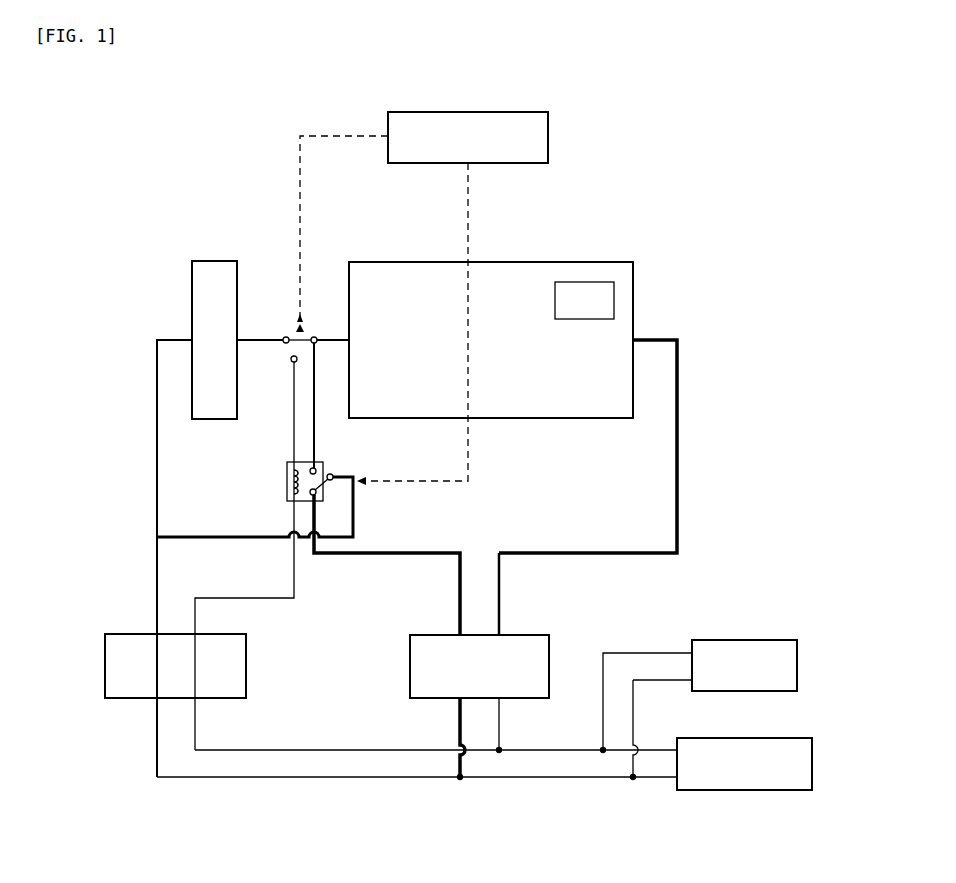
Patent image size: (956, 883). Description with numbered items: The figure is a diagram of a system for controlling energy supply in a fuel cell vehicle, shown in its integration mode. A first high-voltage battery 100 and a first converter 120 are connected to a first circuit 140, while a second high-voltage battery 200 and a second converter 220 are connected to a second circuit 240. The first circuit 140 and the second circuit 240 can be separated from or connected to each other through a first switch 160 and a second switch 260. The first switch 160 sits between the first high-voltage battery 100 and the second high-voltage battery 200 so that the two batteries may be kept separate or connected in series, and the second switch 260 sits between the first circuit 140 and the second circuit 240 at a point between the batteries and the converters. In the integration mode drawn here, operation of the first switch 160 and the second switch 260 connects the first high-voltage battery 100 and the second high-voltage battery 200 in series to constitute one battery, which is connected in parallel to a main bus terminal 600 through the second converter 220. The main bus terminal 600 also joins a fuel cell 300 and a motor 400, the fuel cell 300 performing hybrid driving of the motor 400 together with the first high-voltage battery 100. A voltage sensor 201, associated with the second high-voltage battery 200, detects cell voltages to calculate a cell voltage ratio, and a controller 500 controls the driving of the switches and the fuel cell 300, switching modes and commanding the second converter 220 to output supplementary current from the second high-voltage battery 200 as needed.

The first high-voltage battery 100 is at (208, 261).
The first converter 120 is at (130, 699).
The first circuit 140 is at (155, 440).
The first switch 160 is at (286, 334).
The second high-voltage battery 200 is at (592, 262).
The voltage sensor 201 is at (614, 294).
The second converter 220 is at (410, 667).
The second circuit 240 is at (680, 461).
The second switch 260 is at (285, 485).
The fuel cell 300 is at (767, 790).
The motor 400 is at (767, 640).
The controller 500 is at (548, 136).
The main bus terminal 600 is at (330, 777).